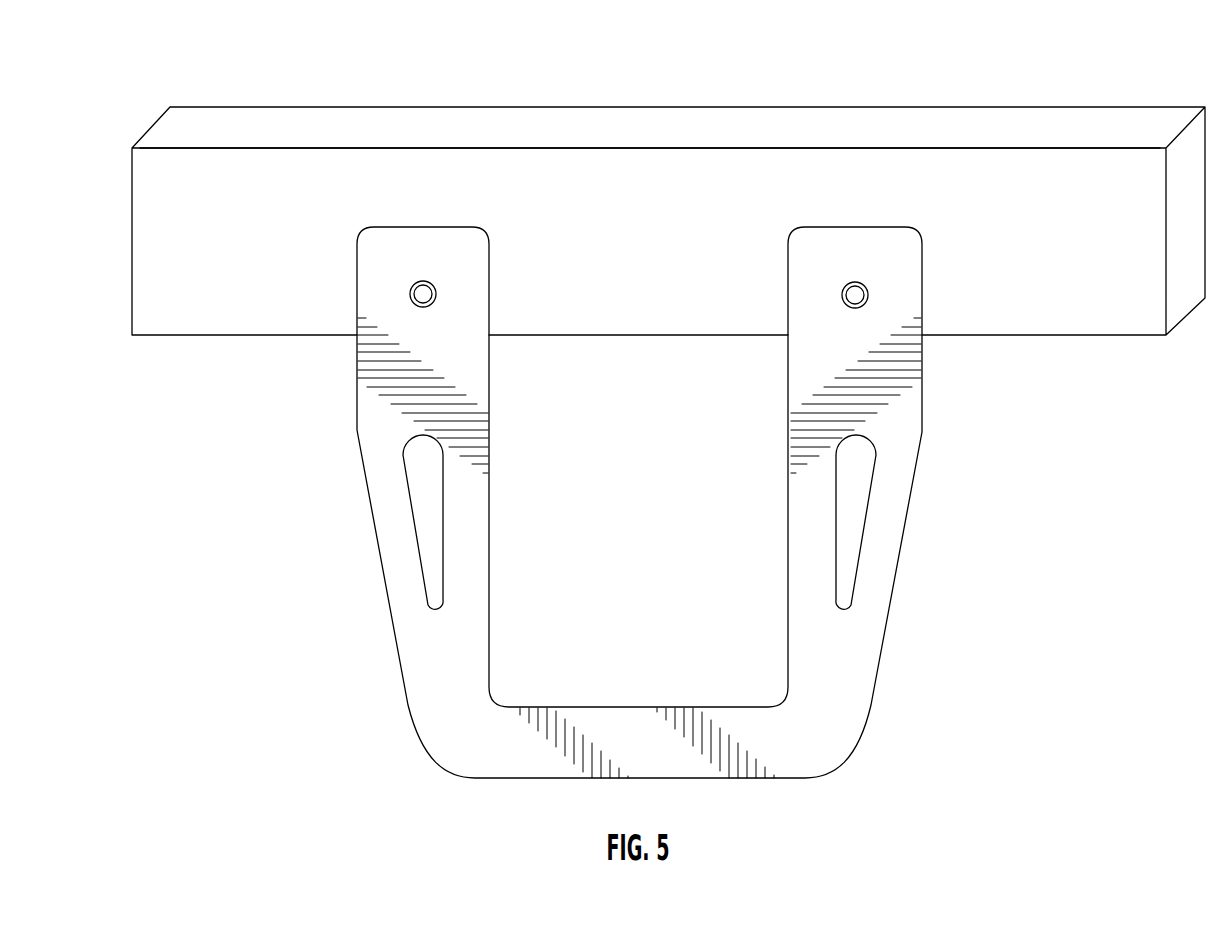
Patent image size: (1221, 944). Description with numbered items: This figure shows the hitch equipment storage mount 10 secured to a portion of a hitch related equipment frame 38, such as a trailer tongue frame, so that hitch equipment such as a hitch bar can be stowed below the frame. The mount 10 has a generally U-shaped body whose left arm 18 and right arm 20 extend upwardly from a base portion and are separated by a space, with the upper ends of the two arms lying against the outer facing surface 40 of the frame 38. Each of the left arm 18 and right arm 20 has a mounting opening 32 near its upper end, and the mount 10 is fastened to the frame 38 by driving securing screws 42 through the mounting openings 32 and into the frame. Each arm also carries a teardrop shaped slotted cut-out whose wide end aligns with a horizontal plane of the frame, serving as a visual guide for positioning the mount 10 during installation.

The hitch equipment storage mount 10 is at (392, 627).
The left arm 18 is at (377, 543).
The right arm 20 is at (914, 480).
The mounting opening 32 is at (418, 306).
The frame 38 is at (225, 163).
The outer facing surface 40 is at (227, 271).
The securing screws 42 is at (423, 294).